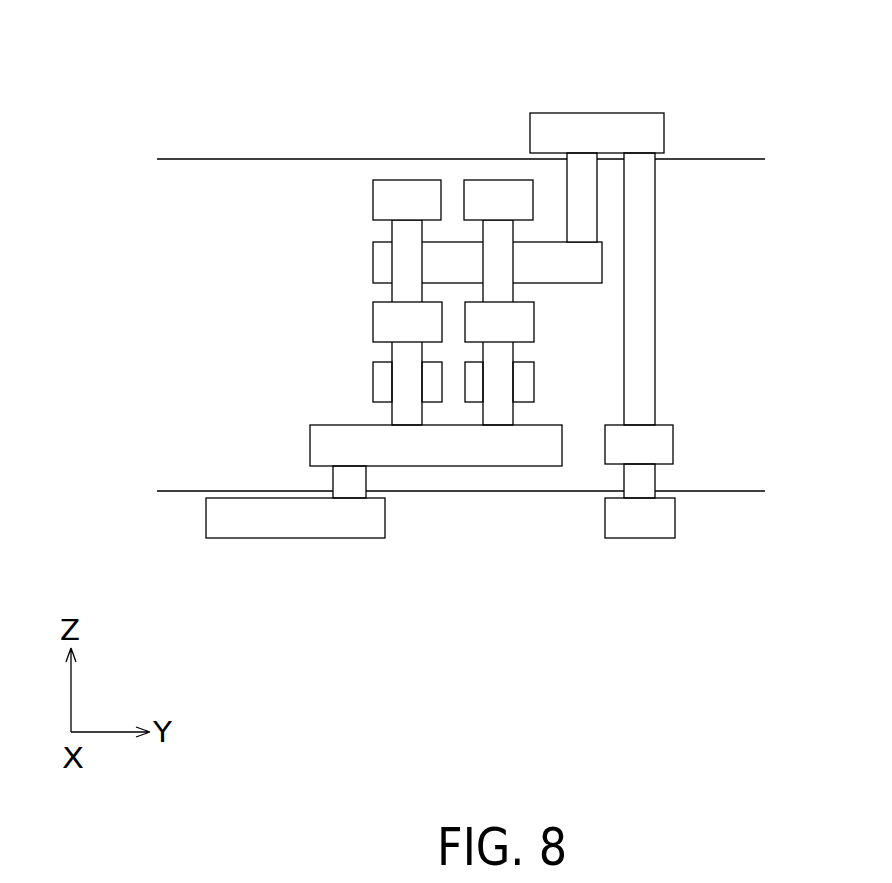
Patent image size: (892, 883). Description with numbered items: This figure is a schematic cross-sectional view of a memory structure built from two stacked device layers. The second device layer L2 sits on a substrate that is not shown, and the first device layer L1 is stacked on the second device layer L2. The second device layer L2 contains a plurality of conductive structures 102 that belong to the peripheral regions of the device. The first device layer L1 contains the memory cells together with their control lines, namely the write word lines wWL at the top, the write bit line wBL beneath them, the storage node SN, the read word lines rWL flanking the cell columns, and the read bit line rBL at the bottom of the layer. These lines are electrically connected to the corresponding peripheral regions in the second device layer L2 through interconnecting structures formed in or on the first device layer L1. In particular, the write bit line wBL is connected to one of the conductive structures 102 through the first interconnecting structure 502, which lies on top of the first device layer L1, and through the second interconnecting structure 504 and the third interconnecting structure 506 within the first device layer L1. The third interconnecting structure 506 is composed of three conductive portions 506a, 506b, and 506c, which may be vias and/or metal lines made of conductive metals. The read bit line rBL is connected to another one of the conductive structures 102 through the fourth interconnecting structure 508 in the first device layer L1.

The conductive structure 102 is at (272, 524).
The first interconnecting structure 502 is at (615, 128).
The second interconnecting structure 504 is at (567, 190).
The third interconnecting structure 506 is at (707, 325).
The conductive portion 506a is at (640, 321).
The conductive portion 506b is at (660, 447).
The conductive portion 506c is at (675, 481).
The fourth interconnecting structure 508 is at (352, 484).
The write word line wWL is at (385, 197).
The write bit line wBL is at (385, 268).
The storage node SN is at (389, 318).
The read word line rWL is at (385, 380).
The read bit line rBL is at (337, 445).
The first device layer L1 is at (211, 266).
The second device layer L2 is at (210, 589).